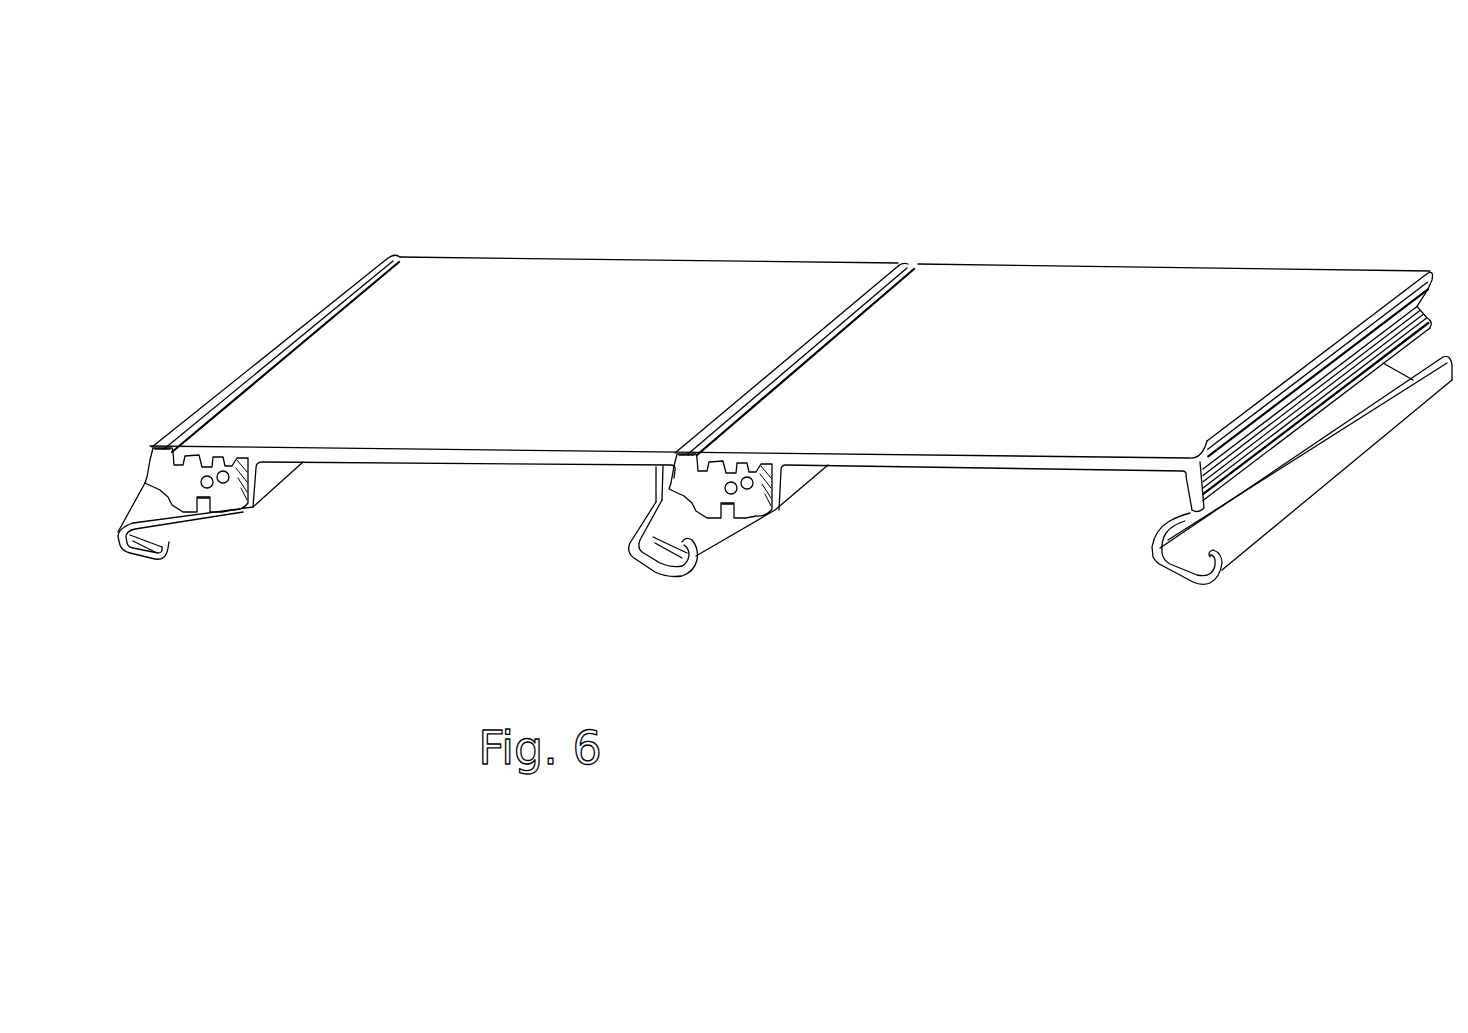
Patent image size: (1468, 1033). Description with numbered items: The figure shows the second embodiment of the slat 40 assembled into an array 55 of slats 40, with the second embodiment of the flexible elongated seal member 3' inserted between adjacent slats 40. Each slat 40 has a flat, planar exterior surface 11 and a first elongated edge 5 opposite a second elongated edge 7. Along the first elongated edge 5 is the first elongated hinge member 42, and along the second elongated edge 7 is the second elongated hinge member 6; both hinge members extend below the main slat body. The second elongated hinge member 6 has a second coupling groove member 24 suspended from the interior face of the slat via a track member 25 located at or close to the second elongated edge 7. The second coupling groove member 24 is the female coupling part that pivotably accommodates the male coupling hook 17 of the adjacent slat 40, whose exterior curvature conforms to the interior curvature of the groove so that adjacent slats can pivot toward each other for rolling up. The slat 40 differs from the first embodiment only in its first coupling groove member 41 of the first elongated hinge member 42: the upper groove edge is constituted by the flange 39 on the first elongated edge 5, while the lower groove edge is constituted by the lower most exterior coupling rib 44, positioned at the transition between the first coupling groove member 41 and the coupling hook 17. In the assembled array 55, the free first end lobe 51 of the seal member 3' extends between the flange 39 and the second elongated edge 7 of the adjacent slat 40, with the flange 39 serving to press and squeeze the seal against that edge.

The array 55 is at (796, 121).
The slat 40 is at (584, 275).
The exterior surface 11 is at (546, 287).
The flange 39 is at (241, 378).
The first elongated edge 5 is at (297, 333).
The second elongated edge 7 is at (822, 328).
The track member 25 is at (658, 473).
The first coupling groove member 41 is at (253, 493).
The flexible elongated seal member 3' is at (458, 445).
The free first end lobe 51 is at (186, 452).
The lower most exterior coupling rib 44 is at (200, 501).
The coupling hook 17 is at (124, 540).
The first elongated hinge member 42 is at (134, 553).
The second elongated hinge member 6 is at (628, 553).
The second coupling groove member 24 is at (1214, 584).